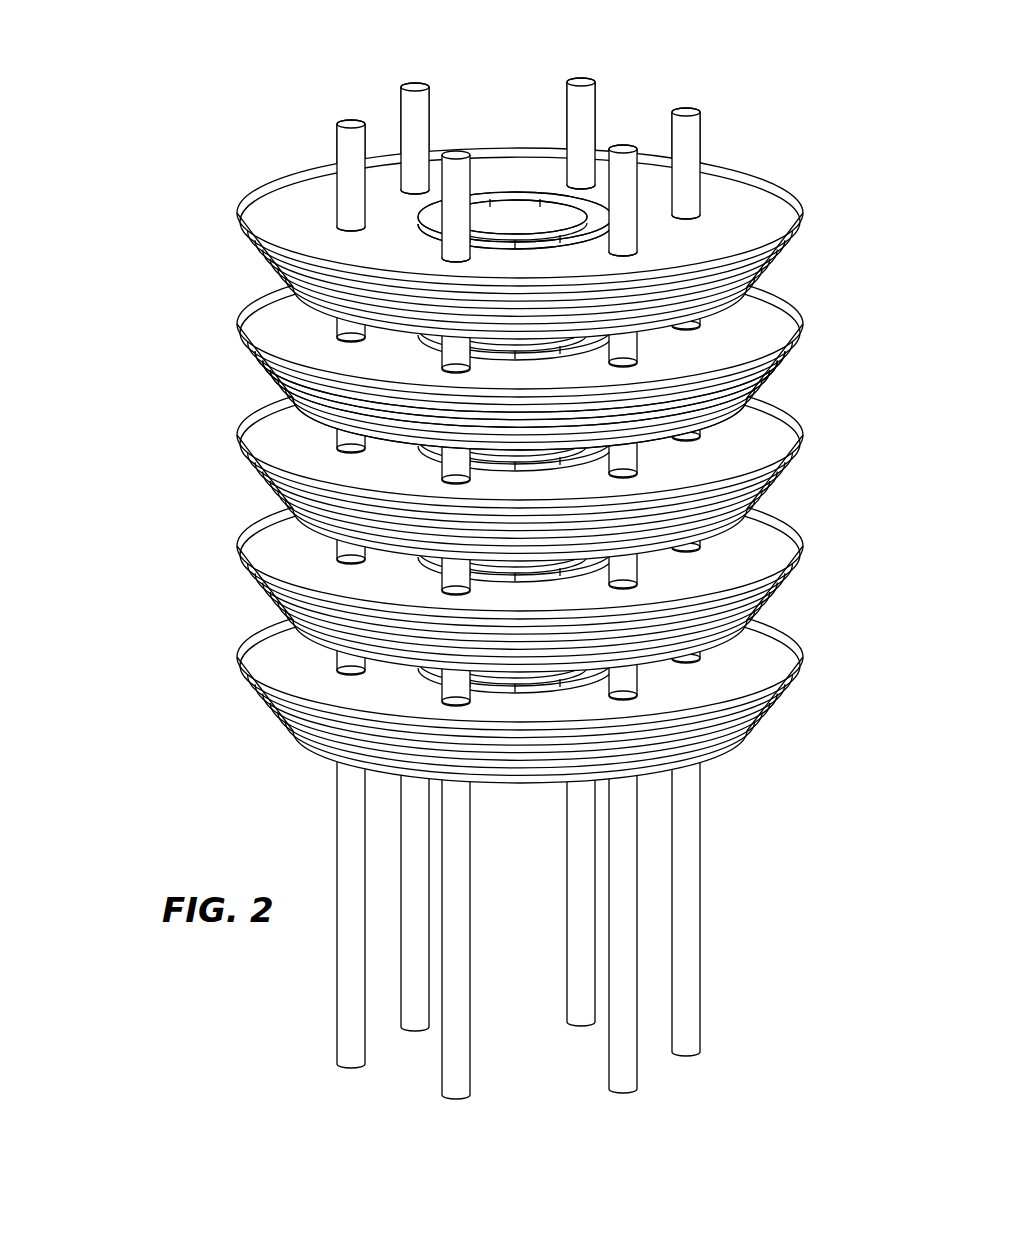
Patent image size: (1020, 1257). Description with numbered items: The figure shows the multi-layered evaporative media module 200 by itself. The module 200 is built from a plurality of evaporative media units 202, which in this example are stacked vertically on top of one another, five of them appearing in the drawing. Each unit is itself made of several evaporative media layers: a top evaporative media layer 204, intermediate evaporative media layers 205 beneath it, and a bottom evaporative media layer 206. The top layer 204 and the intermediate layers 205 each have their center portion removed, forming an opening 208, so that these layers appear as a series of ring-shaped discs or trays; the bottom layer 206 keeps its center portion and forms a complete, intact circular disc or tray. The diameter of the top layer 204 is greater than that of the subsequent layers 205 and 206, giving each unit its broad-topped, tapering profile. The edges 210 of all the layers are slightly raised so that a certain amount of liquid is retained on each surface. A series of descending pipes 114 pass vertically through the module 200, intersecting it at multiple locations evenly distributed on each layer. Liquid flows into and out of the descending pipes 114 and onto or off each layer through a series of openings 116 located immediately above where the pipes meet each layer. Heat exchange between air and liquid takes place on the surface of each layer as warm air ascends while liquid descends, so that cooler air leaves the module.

The evaporative media module 200 is at (300, 93).
The descending pipes 114 is at (585, 113).
The openings 116 is at (693, 205).
The evaporative media units 202 is at (230, 638).
The top evaporative media layer 204 is at (740, 345).
The intermediate evaporative media layers 205 is at (755, 392).
The bottom evaporative media layer 206 is at (725, 423).
The opening 208 is at (502, 225).
The edges 210 is at (805, 543).